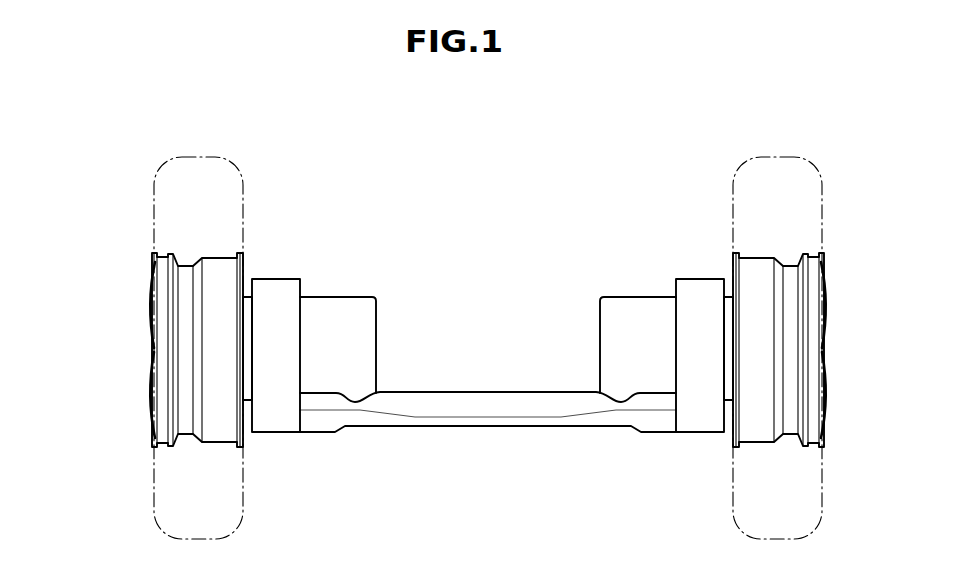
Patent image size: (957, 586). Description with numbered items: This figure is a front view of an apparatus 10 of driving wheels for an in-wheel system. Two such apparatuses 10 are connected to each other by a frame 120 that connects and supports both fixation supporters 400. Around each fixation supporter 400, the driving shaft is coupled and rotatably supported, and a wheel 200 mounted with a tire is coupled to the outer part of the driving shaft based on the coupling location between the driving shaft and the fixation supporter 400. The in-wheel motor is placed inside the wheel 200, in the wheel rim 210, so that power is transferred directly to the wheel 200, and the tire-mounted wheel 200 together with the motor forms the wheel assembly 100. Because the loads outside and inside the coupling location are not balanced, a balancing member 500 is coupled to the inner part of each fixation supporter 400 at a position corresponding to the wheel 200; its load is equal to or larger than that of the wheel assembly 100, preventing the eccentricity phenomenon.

The apparatus of driving wheels for an in-wheel system 10 is at (130, 129).
The wheel assembly 100 is at (130, 246).
The frame 120 is at (473, 403).
The wheel 200 is at (221, 258).
The wheel rim 210 is at (204, 257).
The fixation supporter 400 is at (280, 418).
The balancing member 500 is at (340, 296).